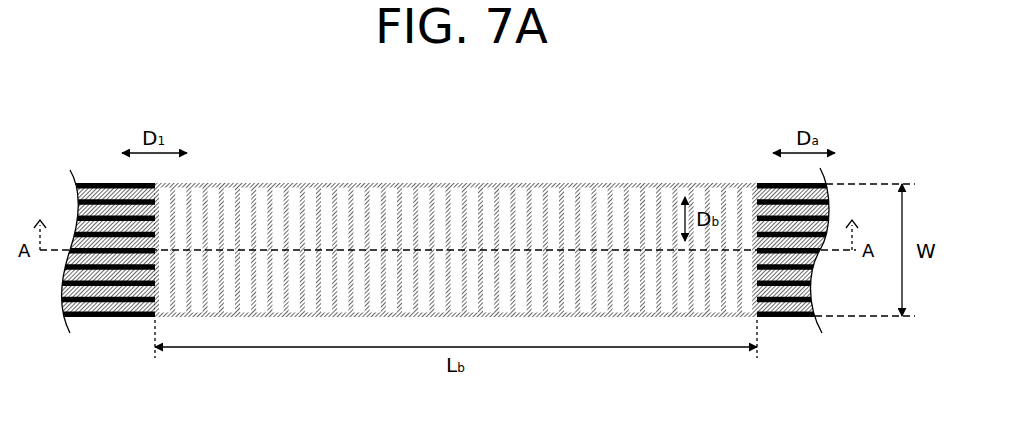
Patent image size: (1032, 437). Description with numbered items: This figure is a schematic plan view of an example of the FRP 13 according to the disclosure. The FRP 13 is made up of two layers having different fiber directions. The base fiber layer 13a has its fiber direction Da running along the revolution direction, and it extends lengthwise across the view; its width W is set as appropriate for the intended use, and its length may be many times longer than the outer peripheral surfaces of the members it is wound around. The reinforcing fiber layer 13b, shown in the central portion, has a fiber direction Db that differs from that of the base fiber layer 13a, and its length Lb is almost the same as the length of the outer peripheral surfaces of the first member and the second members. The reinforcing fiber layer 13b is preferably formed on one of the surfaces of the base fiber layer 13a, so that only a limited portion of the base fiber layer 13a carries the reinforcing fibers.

The FRP 13 is at (491, 205).
The base fiber layer 13a is at (768, 198).
The reinforcing fiber layer 13b is at (672, 186).